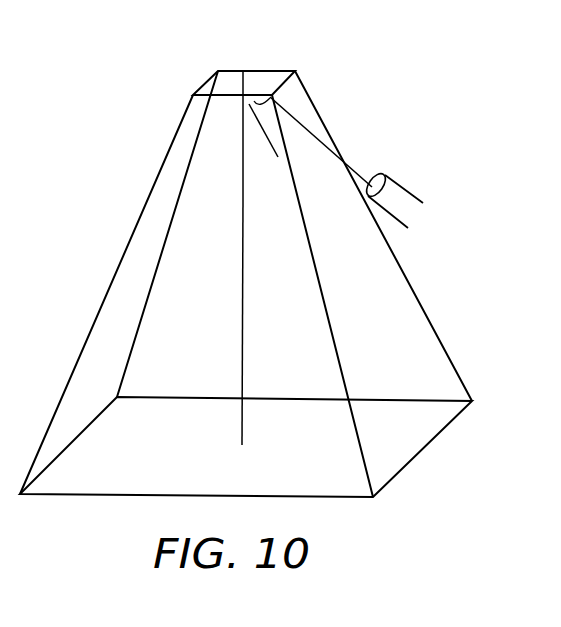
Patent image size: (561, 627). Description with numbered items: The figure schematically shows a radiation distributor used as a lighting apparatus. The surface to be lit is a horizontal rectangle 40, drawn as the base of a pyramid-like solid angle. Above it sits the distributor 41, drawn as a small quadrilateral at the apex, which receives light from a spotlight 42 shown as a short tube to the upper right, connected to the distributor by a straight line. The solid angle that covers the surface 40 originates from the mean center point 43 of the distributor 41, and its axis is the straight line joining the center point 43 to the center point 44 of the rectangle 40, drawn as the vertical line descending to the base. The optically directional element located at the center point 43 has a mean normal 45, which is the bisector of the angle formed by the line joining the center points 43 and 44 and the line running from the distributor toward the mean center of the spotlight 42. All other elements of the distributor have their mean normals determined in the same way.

The rectangle 40 is at (90, 485).
The distributor 41 is at (223, 82).
The spotlight 42 is at (392, 187).
The mean center point 43 is at (243, 70).
The center point 44 is at (242, 430).
The mean normal 45 is at (270, 142).